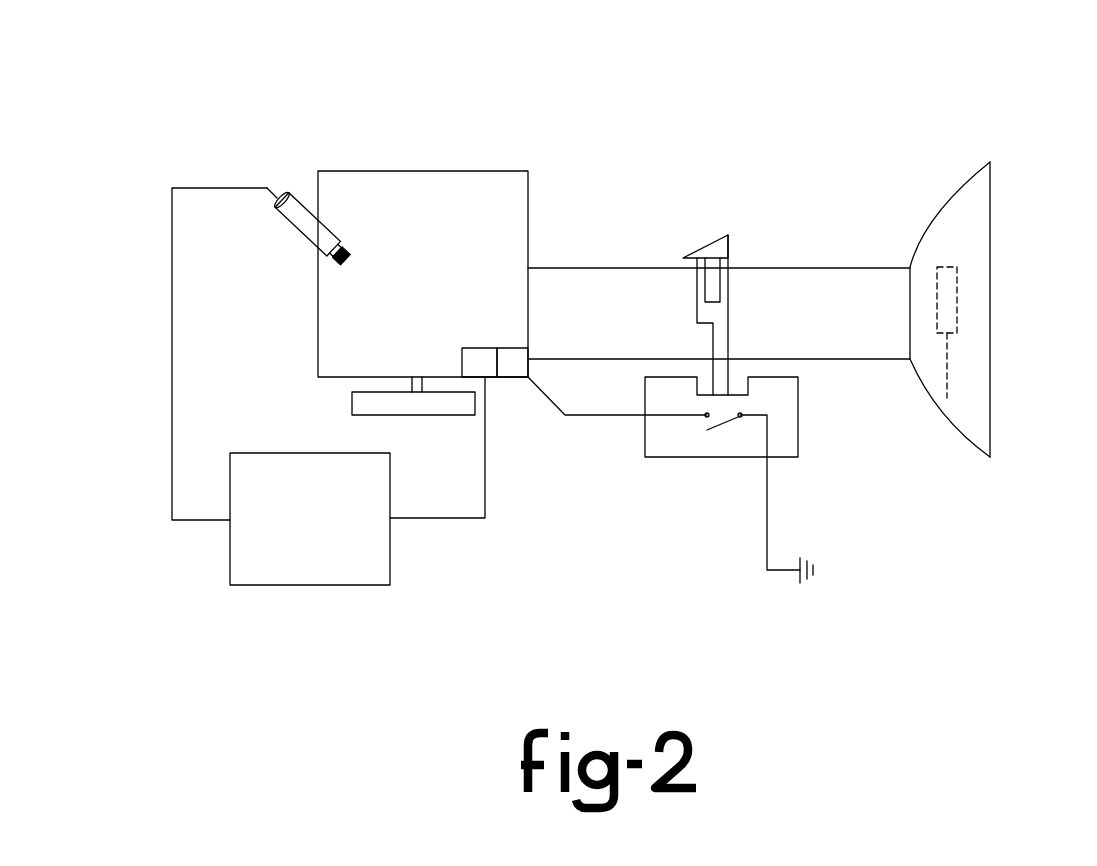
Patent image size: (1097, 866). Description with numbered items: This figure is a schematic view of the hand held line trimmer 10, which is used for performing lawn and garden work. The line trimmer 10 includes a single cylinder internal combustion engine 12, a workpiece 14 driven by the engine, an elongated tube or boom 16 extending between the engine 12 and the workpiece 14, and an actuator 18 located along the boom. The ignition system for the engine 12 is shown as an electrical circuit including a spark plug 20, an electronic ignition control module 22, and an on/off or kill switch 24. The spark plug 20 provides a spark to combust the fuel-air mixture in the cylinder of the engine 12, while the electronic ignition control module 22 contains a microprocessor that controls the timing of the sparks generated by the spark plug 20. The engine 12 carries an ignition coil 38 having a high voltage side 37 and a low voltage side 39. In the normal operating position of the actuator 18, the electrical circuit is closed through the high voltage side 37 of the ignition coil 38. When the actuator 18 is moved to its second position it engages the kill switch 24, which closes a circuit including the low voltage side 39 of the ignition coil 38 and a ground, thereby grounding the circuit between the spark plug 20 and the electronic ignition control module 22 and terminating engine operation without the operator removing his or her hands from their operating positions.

The line trimmer 10 is at (590, 98).
The internal combustion engine 12 is at (405, 175).
The workpiece 14 is at (957, 290).
The boom 16 is at (835, 268).
The actuator 18 is at (705, 228).
The spark plug 20 is at (295, 197).
The electronic ignition control module 22 is at (313, 573).
The kill switch 24 is at (792, 443).
The high voltage side 37 is at (465, 357).
The ignition coil 38 is at (490, 347).
The low voltage side 39 is at (508, 368).